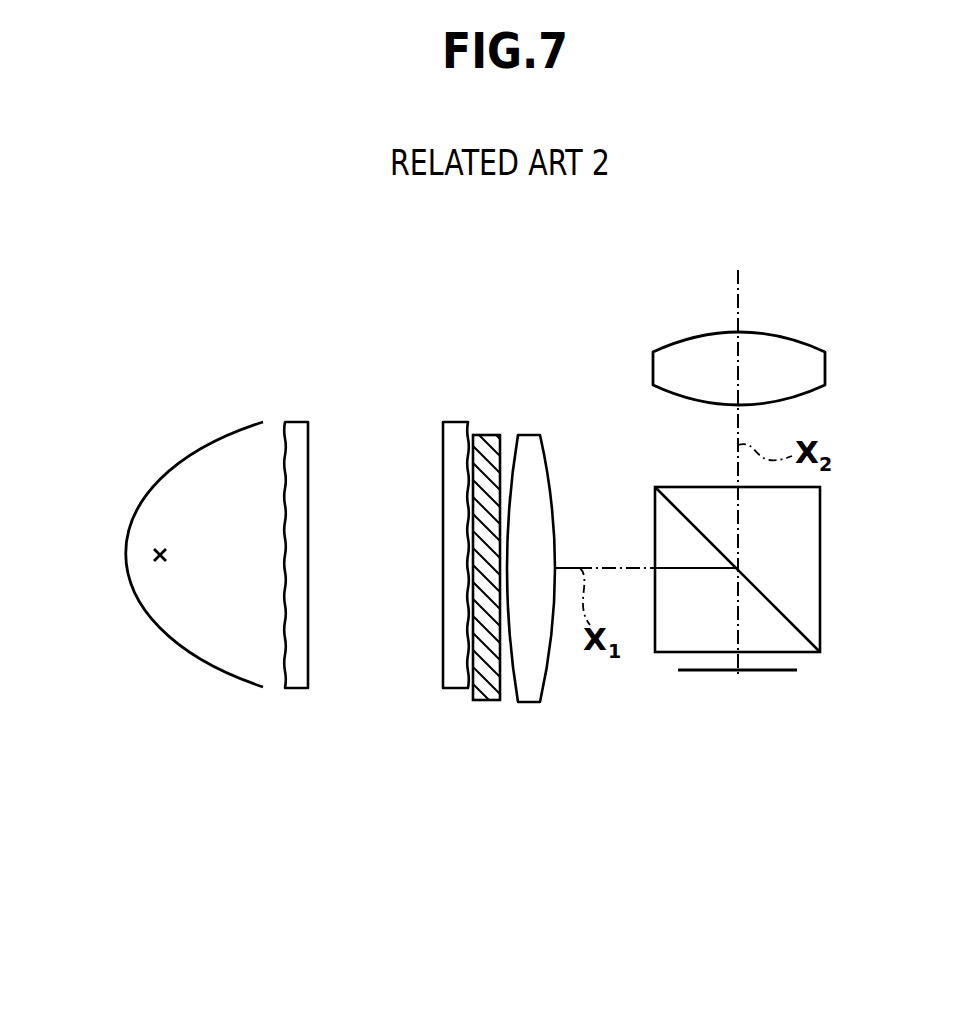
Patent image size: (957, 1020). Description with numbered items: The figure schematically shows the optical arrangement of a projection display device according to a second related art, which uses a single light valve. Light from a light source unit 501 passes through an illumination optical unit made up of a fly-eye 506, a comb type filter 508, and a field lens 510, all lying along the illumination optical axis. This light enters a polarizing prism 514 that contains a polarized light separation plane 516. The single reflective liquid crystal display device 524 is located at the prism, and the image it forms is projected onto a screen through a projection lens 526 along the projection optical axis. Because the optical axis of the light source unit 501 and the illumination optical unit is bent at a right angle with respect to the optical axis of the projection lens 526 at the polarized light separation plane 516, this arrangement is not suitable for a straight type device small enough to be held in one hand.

The light source unit 501 is at (130, 653).
The fly-eye 506 is at (470, 403).
The comb type filter 508 is at (492, 692).
The field lens 510 is at (528, 700).
The polarizing prism 514 is at (810, 524).
The polarized light separation plane 516 is at (800, 630).
The reflective liquid crystal display device 524 is at (720, 672).
The projection lens 526 is at (625, 292).